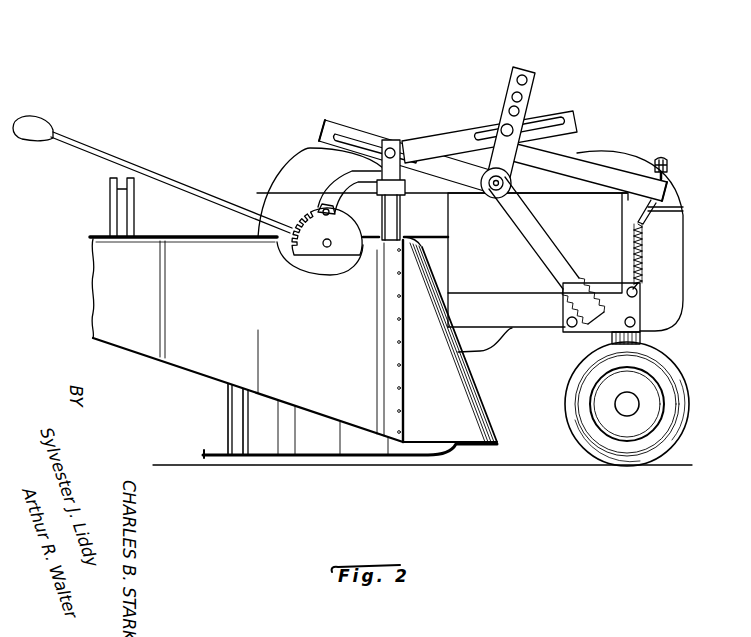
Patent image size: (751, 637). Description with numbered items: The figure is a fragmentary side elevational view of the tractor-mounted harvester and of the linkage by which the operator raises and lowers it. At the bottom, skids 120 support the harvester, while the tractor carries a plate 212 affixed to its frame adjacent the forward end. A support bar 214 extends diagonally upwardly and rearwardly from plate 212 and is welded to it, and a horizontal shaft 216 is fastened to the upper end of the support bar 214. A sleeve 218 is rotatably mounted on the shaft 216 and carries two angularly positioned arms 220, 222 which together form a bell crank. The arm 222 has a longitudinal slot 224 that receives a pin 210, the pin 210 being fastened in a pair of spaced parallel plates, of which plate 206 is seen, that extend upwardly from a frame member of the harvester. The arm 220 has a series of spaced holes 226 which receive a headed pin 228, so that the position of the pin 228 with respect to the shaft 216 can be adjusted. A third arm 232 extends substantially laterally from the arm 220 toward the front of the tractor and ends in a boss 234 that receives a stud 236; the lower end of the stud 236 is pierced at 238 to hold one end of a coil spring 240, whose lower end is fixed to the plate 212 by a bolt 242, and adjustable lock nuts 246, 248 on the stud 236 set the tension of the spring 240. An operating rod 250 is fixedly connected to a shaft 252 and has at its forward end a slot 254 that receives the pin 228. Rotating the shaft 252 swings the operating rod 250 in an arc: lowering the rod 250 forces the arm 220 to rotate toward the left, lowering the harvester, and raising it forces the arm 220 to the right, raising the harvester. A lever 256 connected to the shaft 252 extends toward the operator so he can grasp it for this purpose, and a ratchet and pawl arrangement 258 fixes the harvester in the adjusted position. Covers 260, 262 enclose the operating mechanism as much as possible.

The skids 120 is at (348, 452).
The plate 206 is at (397, 148).
The pin 210 is at (390, 147).
The plate 212 is at (633, 309).
The support bar 214 is at (543, 245).
The horizontal shaft 216 is at (494, 187).
The sleeve 218 is at (512, 184).
The arm 220 is at (538, 82).
The arm 222 is at (327, 125).
The longitudinal slot 224 is at (357, 141).
The spaced holes 226 is at (525, 74).
The headed pin 228 is at (502, 126).
The third arm 232 is at (544, 149).
The boss 234 is at (680, 175).
The stud 236 is at (650, 206).
The pierced portion 238 is at (645, 216).
The coil spring 240 is at (643, 258).
The bolt 242 is at (638, 288).
The adjustable lock nut 246 is at (665, 164).
The adjustable lock nut 248 is at (657, 158).
The operating rod 250 is at (338, 177).
The shaft 252 is at (322, 251).
The slot 254 is at (546, 124).
The lever 256 is at (108, 158).
The ratchet and pawl arrangement 258 is at (280, 247).
The cover 260 is at (468, 390).
The cover 262 is at (293, 295).